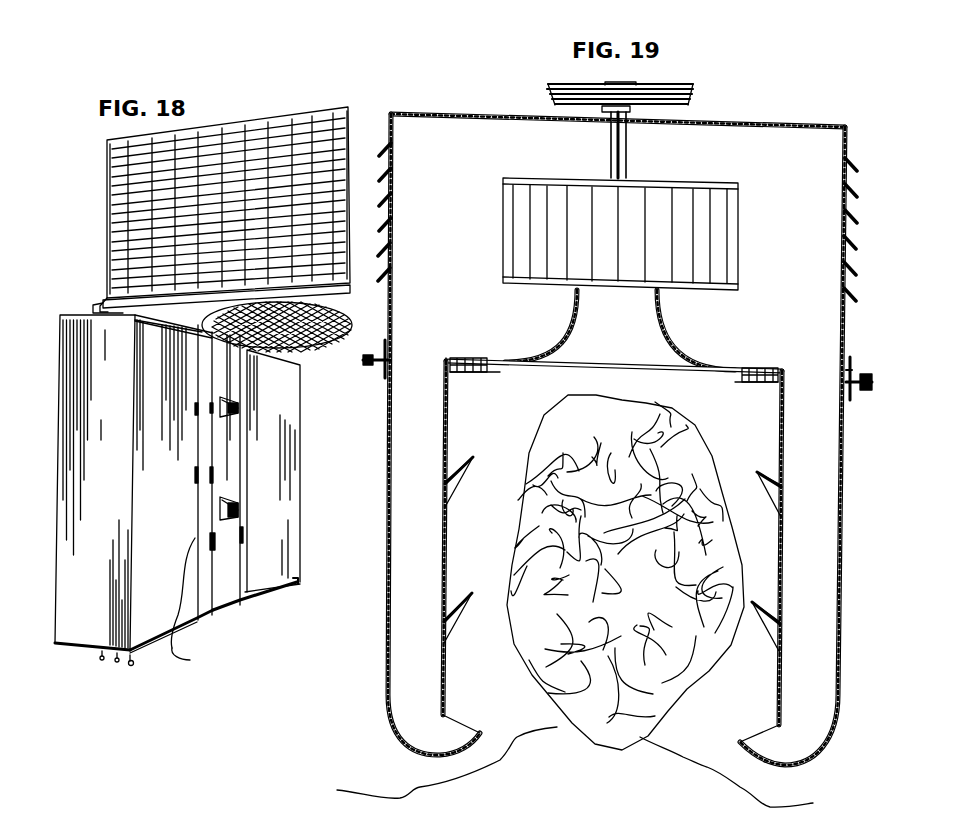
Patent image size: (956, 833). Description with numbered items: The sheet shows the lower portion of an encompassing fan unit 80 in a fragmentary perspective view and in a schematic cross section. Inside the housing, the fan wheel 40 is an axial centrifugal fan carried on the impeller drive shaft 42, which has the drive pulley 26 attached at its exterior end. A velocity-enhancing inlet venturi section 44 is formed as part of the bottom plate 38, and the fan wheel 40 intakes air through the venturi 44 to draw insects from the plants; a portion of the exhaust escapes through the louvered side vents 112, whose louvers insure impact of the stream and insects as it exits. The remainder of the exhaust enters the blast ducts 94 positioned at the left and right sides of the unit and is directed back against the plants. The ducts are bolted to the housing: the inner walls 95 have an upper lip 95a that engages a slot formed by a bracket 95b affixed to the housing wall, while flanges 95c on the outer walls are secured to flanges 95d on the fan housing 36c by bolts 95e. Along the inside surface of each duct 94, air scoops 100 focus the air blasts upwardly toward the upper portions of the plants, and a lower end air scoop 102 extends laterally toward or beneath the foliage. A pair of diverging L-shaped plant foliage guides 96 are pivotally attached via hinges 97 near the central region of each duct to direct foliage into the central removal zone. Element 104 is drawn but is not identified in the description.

In FIG. 18, the encompassing fan unit 80 is at (92, 236).
In FIG. 19, the encompassing fan unit 80 is at (457, 110).
In FIG. 18, the louvered side vents 112 is at (107, 182).
In FIG. 19, the louvered side vents 112 is at (379, 158).
In FIG. 18, the outlet grate / path 104 is at (314, 345).
In FIG. 19, the outlet grate / path 104 is at (577, 374).
In FIG. 18, the plant foliage guides 96 is at (62, 440).
In FIG. 18, the air scoops 100 is at (238, 512).
In FIG. 19, the air scoops 100 is at (478, 583).
In FIG. 18, the hinges 97 is at (192, 605).
In FIG. 18, the blast ducts 94 is at (218, 632).
In FIG. 19, the blast ducts 94 is at (387, 574).
In FIG. 19, the fan housing 36c is at (507, 112).
In FIG. 19, the drive pulley 26 is at (670, 92).
In FIG. 19, the impeller drive shaft 42 is at (630, 113).
In FIG. 19, the fan wheel 40 is at (720, 232).
In FIG. 19, the inlet venturi section 44 is at (662, 321).
In FIG. 19, the bottom plate 38 is at (446, 359).
In FIG. 19, the inner walls 95 is at (462, 420).
In FIG. 19, the upper lip 95a is at (484, 358).
In FIG. 19, the bracket 95b is at (470, 372).
In FIG. 19, the flanges 95c is at (378, 368).
In FIG. 19, the flanges 95d is at (850, 370).
In FIG. 19, the bolts 95e is at (858, 388).
In FIG. 19, the lower end air scoop 102 is at (448, 720).